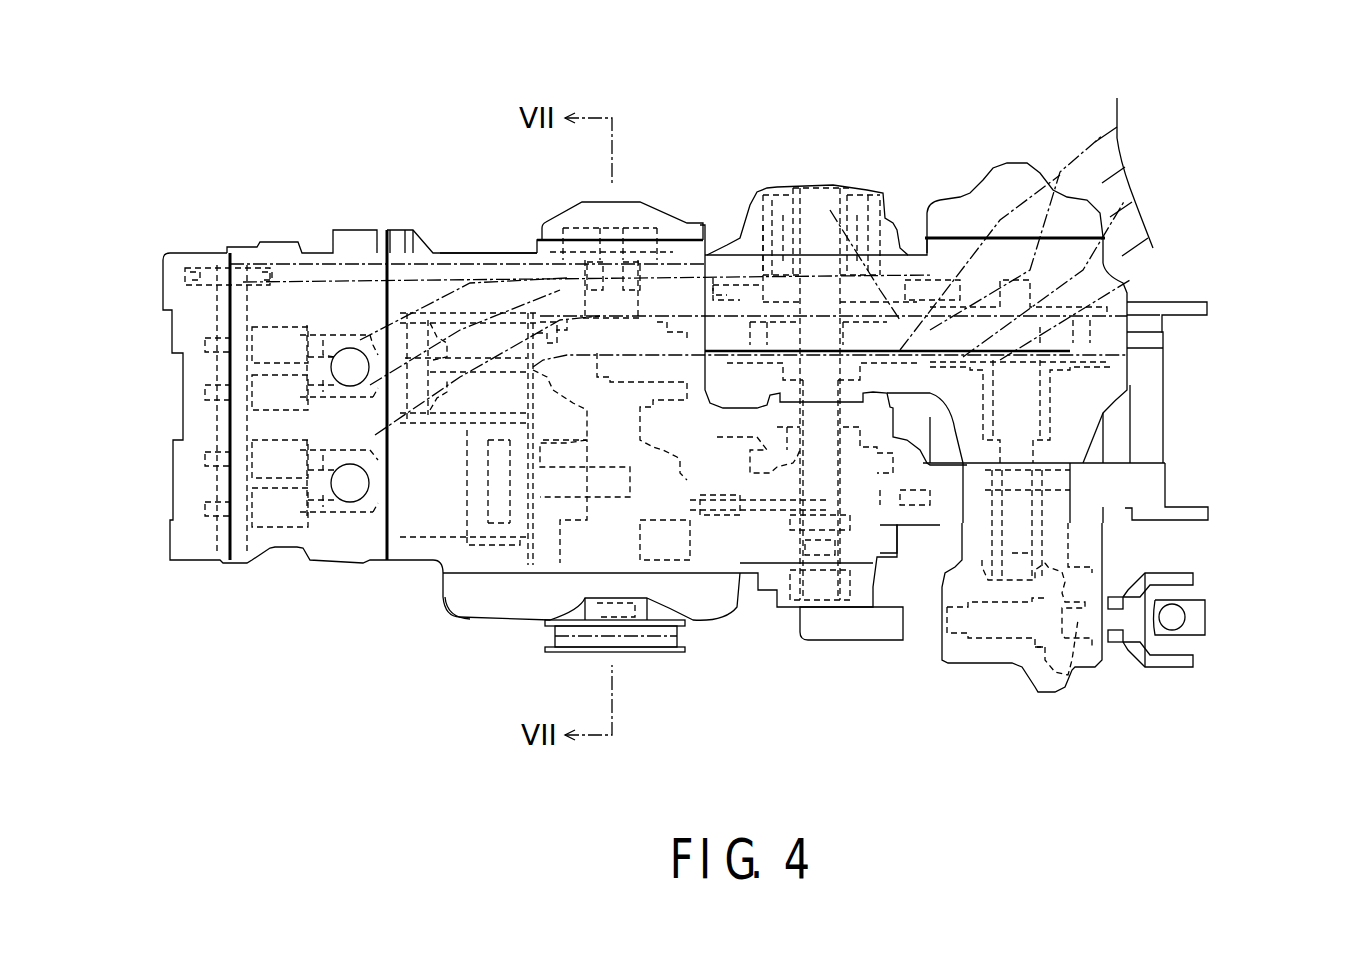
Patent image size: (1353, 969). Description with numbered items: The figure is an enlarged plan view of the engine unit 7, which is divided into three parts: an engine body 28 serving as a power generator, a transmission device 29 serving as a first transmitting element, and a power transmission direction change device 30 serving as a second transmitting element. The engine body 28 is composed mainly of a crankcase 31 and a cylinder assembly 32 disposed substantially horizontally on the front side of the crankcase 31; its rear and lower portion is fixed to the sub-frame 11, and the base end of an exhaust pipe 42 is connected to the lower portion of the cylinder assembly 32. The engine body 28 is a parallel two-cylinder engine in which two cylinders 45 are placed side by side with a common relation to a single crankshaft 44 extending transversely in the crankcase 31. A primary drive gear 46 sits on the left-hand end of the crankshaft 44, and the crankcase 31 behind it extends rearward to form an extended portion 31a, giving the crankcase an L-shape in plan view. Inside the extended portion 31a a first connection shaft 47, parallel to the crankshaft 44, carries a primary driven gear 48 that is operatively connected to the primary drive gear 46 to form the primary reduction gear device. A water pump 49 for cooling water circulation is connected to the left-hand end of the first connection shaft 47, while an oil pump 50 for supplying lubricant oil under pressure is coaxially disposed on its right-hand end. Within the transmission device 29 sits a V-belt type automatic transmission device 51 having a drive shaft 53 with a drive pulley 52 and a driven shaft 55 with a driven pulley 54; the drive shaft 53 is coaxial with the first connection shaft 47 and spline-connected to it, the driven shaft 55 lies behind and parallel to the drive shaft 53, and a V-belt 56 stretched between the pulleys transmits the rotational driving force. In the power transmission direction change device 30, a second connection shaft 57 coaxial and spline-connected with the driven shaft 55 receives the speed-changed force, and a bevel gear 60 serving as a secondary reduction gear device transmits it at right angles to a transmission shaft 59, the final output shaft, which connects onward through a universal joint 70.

The engine unit 7 is at (677, 150).
The sub-frame 11 is at (1175, 302).
The engine body 28 is at (442, 620).
The transmission device 29 is at (878, 178).
The power transmission direction change device 30 is at (990, 667).
The crankcase 31 is at (483, 253).
The extended portion 31a is at (770, 548).
The cylinder assembly 32 is at (332, 555).
The exhaust pipe 42 is at (383, 238).
The crankshaft 44 is at (612, 547).
The cylinders 45 is at (452, 545).
The primary drive gear 46 is at (683, 557).
The first connection shaft 47 is at (797, 500).
The primary driven gear 48 is at (921, 500).
The water pump 49 is at (825, 598).
The oil pump 50 is at (767, 450).
The V-belt type automatic transmission device 51 is at (943, 290).
The drive pulley 52 is at (712, 255).
The drive shaft 53 is at (827, 185).
The driven pulley 54 is at (1120, 285).
The driven shaft 55 is at (997, 280).
The V-belt 56 is at (898, 243).
The second connection shaft 57 is at (1080, 528).
The transmission shaft 59 is at (1075, 670).
The bevel gear 60 is at (1048, 675).
The universal joint 70 is at (1155, 667).